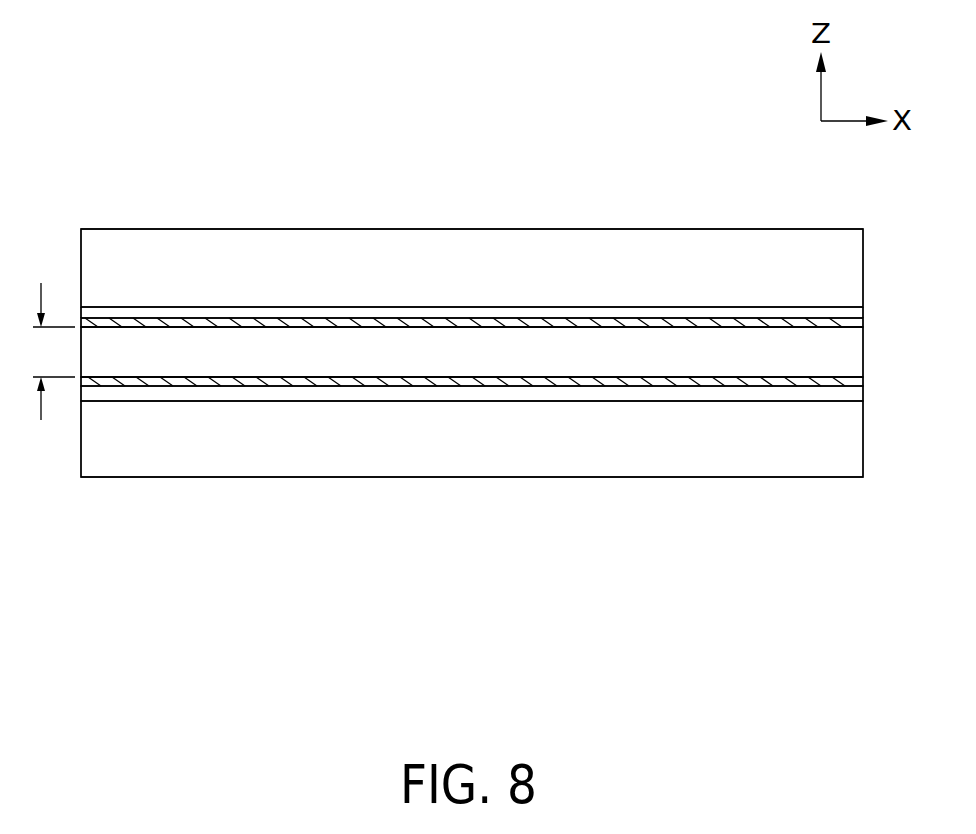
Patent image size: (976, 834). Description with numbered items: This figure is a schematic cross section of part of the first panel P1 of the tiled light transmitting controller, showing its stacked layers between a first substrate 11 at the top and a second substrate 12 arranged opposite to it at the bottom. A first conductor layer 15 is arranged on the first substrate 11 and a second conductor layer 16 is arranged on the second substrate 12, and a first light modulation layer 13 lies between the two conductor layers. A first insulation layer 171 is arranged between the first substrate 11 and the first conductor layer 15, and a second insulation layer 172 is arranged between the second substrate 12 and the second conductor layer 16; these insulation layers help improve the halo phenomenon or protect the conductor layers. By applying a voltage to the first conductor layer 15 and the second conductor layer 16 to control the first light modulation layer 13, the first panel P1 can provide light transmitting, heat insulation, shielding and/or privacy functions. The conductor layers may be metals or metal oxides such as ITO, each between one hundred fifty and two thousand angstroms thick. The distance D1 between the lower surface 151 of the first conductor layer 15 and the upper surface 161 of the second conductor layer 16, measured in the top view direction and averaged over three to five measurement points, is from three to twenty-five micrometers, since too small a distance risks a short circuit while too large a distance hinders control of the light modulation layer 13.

The first panel P1 is at (208, 130).
The first substrate 11 is at (852, 262).
The second substrate 12 is at (848, 443).
The first light modulation layer 13 is at (853, 352).
The first conductor layer 15 is at (857, 320).
The second conductor layer 16 is at (860, 380).
The lower surface of the first conductor layer 151 is at (157, 325).
The upper surface of the second conductor layer 161 is at (167, 378).
The first insulation layer 171 is at (859, 309).
The second insulation layer 172 is at (858, 395).
The distance D1 is at (51, 351).